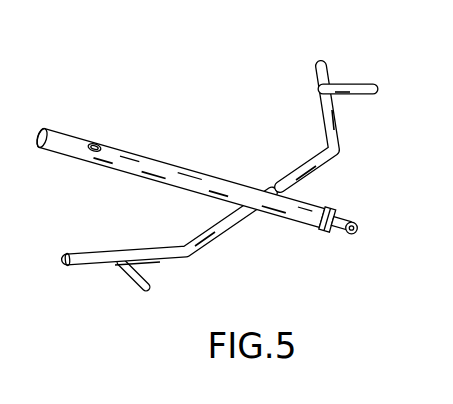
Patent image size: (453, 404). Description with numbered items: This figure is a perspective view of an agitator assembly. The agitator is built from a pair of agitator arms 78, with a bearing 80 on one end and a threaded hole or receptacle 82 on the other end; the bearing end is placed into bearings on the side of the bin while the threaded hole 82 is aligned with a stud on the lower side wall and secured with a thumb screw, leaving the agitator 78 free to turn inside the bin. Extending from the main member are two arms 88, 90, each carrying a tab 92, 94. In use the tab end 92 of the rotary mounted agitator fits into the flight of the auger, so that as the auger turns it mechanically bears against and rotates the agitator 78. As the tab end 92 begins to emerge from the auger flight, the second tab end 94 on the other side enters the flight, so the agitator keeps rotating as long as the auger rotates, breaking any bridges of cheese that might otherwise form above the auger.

The agitator arms 78 is at (143, 153).
The bearing 80 is at (348, 220).
The threaded hole 82 is at (47, 130).
The arm 88 is at (90, 264).
The arm 90 is at (316, 70).
The tab 92 is at (141, 292).
The tab 94 is at (352, 87).